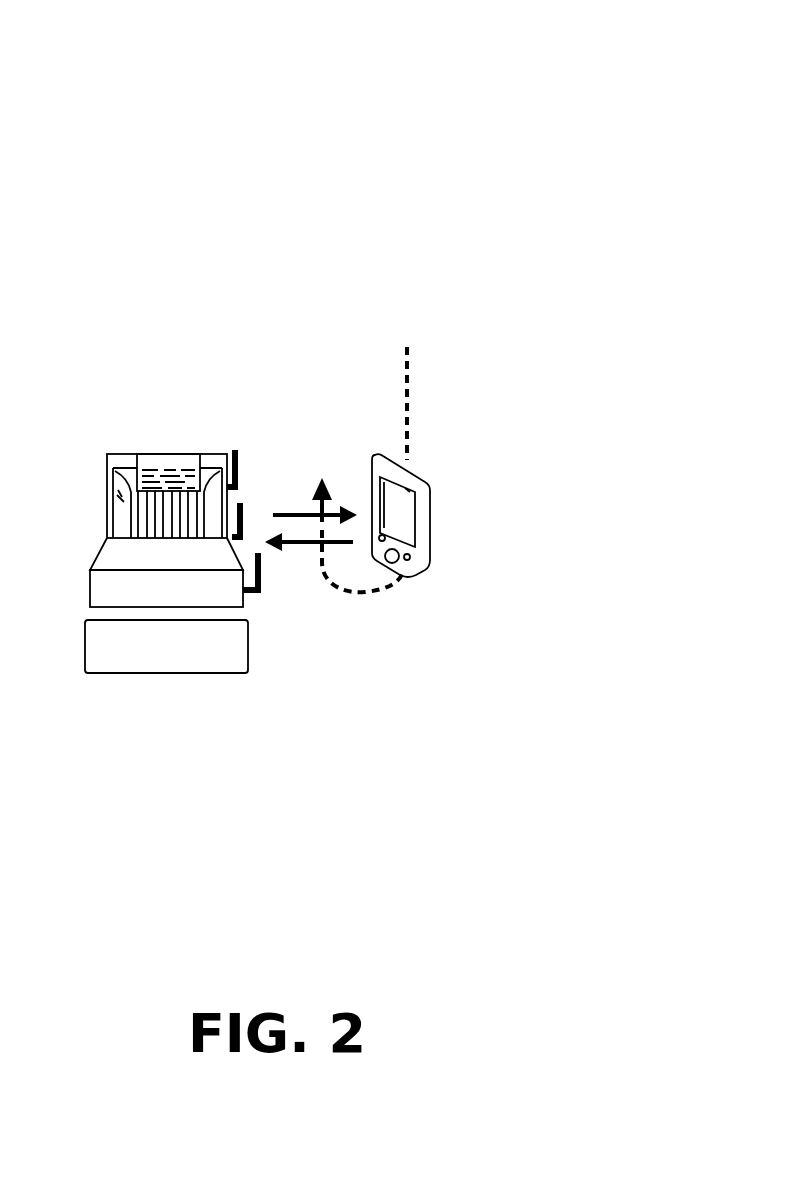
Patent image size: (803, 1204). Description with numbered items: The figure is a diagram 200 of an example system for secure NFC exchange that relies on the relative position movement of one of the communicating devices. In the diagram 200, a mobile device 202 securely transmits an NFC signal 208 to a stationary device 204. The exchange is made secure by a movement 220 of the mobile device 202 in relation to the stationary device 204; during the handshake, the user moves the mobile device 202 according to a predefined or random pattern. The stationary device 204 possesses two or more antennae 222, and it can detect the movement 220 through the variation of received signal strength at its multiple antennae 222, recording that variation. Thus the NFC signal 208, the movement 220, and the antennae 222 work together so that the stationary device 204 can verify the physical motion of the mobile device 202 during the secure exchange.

The diagram 200 is at (528, 73).
The mobile device 202 is at (448, 487).
The stationary device 204 is at (137, 433).
The NFC signal 208 is at (297, 578).
The movement 220 is at (425, 383).
The antennae 222 is at (262, 548).